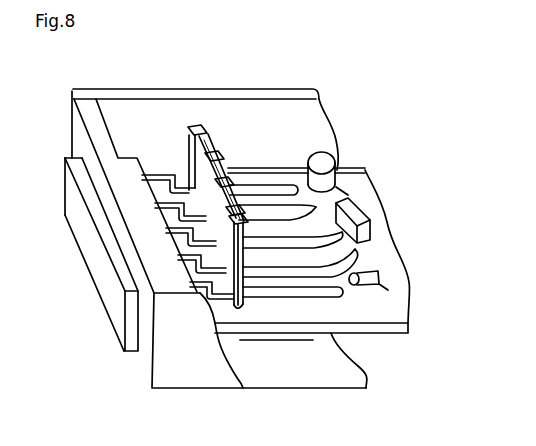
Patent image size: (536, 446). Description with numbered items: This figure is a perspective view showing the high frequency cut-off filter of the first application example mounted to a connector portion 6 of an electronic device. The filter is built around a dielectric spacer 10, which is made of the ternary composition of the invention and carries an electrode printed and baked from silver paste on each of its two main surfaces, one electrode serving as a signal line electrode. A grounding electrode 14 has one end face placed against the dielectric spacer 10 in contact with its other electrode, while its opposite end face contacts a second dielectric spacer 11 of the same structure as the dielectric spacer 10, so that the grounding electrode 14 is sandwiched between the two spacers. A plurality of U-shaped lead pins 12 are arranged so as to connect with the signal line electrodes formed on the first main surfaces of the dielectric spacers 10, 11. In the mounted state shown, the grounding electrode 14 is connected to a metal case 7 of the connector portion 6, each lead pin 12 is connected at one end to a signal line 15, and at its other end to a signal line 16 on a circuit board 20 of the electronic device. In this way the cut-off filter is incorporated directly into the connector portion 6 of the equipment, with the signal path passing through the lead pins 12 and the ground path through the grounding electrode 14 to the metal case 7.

The connector portion 6 is at (115, 251).
The metal case 7 is at (202, 370).
The dielectric spacer 10 is at (192, 125).
The dielectric spacer 11 is at (202, 126).
The U-shaped lead pins 12 is at (187, 157).
The grounding electrode 14 is at (266, 292).
The signal line 15 is at (150, 175).
The signal line 16 is at (260, 187).
The circuit board 20 is at (406, 285).